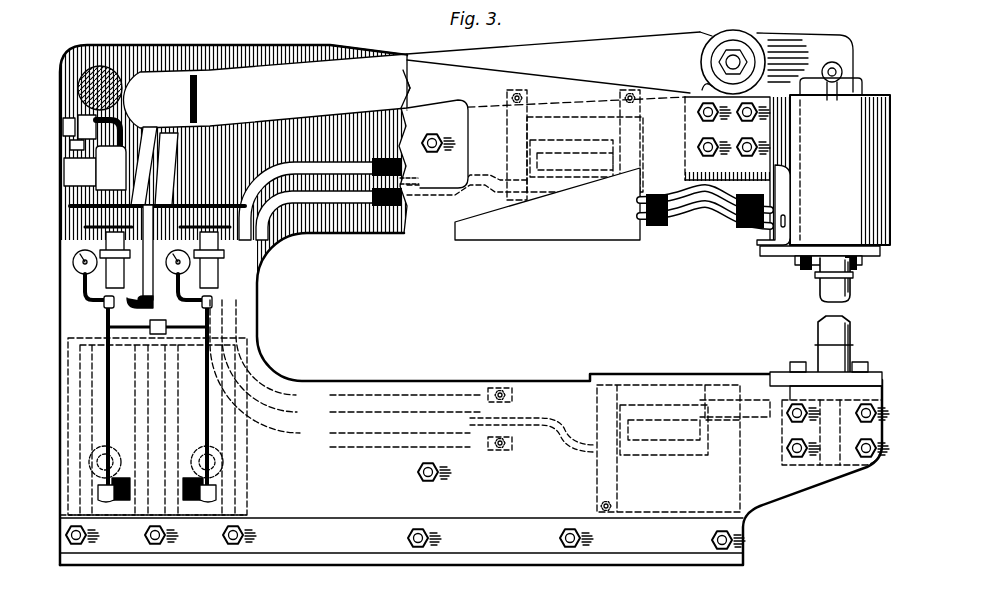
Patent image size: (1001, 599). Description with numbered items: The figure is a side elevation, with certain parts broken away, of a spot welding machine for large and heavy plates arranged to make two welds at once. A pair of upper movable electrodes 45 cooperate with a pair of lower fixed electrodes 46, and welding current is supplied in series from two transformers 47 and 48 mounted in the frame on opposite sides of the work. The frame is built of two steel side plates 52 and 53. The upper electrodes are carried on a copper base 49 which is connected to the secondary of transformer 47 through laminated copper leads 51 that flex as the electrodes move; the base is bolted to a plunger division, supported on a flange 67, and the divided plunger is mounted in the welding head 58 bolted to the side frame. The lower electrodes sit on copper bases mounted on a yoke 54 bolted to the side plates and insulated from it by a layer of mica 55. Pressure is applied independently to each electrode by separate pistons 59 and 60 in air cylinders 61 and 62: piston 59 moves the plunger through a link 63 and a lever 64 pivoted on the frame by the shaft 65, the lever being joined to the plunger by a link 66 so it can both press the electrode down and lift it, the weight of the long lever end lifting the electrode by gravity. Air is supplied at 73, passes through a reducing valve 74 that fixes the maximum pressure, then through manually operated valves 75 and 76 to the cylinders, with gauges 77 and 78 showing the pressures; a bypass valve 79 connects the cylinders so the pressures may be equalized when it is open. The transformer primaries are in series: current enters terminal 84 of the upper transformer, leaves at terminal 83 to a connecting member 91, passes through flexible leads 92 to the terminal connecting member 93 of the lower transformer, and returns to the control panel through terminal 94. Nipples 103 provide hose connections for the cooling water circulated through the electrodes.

The upper movable electrodes 45 is at (850, 283).
The lower fixed electrodes 46 is at (850, 327).
The transformer 47 is at (556, 184).
The transformer 48 is at (632, 382).
The copper base 49 is at (815, 260).
The copper leads 51 is at (697, 222).
The steel side plate 52 is at (352, 50).
The steel side plate 53 is at (438, 72).
The yoke 54 is at (800, 372).
The layer of mica 55 is at (884, 380).
The welding head 58 is at (886, 130).
The piston 59 is at (92, 468).
The piston 60 is at (226, 462).
The air cylinder 61 is at (66, 377).
The air cylinder 62 is at (254, 358).
The link 63 is at (143, 180).
The lever 64 is at (228, 90).
The shaft 65 is at (733, 54).
The link 66 is at (838, 79).
The flange 67 is at (768, 250).
The air supply 73 is at (62, 128).
The reducing valve 74 is at (66, 172).
The manually operated valve 75 is at (118, 236).
The manually operated valve 76 is at (240, 243).
The gauge 77 is at (76, 268).
The gauge 78 is at (238, 262).
The bypass valve 79 is at (158, 396).
The primary winding terminal 83 is at (495, 172).
The primary winding terminal 84 is at (500, 150).
The connecting member 91 is at (414, 230).
The flexible leads 92 is at (348, 222).
The terminal connecting member 93 is at (522, 400).
The terminal 94 is at (578, 452).
The nipples 103 is at (822, 278).